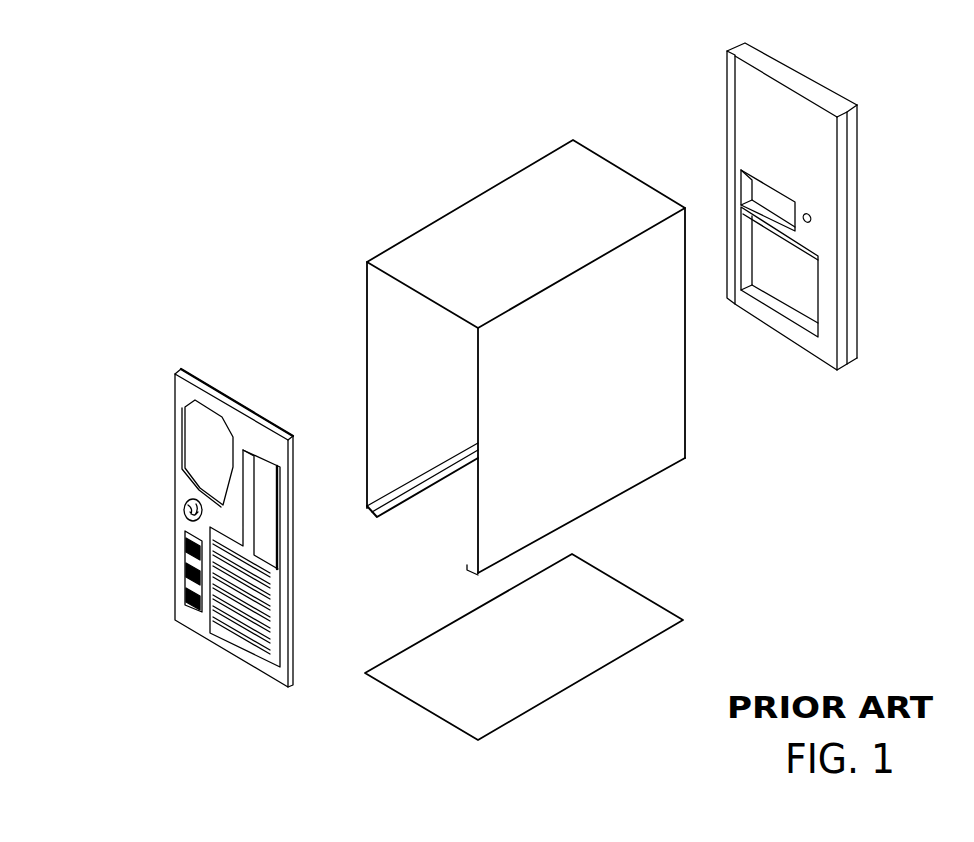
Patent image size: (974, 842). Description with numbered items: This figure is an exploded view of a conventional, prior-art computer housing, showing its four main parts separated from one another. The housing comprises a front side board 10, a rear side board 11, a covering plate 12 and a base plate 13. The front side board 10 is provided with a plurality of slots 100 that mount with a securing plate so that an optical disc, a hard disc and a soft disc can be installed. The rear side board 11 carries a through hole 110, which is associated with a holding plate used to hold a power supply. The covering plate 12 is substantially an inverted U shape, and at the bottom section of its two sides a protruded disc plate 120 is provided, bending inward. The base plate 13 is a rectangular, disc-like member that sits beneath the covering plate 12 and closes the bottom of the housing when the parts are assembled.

The front side board 10 is at (857, 217).
The slots 100 is at (788, 275).
The rear side board 11 is at (167, 530).
The through hole 110 is at (193, 447).
The covering plate 12 is at (460, 218).
The protruded disc plate 120 is at (412, 493).
The base plate 13 is at (623, 642).